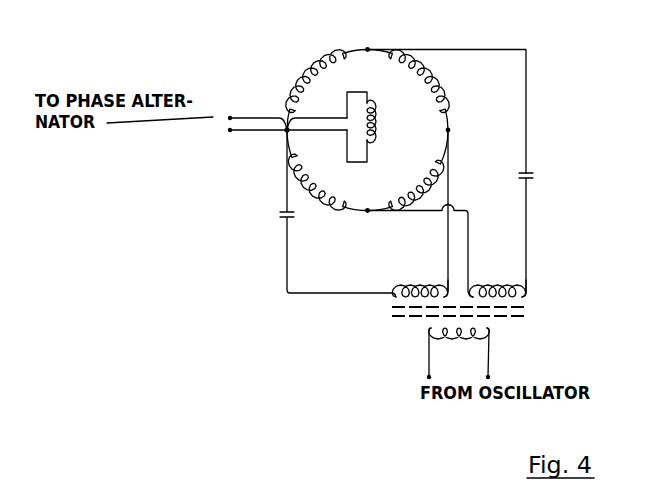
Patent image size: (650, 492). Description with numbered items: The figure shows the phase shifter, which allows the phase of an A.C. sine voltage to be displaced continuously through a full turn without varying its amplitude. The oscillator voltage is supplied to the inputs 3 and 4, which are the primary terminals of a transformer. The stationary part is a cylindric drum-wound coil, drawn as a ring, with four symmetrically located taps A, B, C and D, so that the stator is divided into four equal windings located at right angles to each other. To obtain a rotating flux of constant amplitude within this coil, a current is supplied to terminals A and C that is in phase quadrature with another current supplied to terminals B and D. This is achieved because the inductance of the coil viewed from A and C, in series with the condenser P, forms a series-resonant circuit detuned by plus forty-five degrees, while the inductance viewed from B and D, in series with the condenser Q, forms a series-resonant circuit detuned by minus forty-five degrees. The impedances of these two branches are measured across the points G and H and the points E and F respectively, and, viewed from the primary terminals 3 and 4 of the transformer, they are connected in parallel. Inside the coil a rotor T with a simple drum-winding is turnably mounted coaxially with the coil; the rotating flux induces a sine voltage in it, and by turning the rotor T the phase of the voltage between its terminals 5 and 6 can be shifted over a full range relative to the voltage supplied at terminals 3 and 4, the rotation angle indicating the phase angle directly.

The tap A is at (374, 36).
The tap B is at (460, 130).
The tap C is at (367, 225).
The tap D is at (276, 145).
The rotor T is at (371, 127).
The condenser Q is at (327, 213).
The condenser P is at (535, 222).
The point E is at (412, 280).
The point F is at (438, 277).
The point G is at (497, 280).
The point H is at (536, 278).
The input 3 is at (448, 355).
The input 4 is at (497, 355).
The terminal of the rotor 5 is at (285, 111).
The terminal of the rotor 6 is at (286, 145).